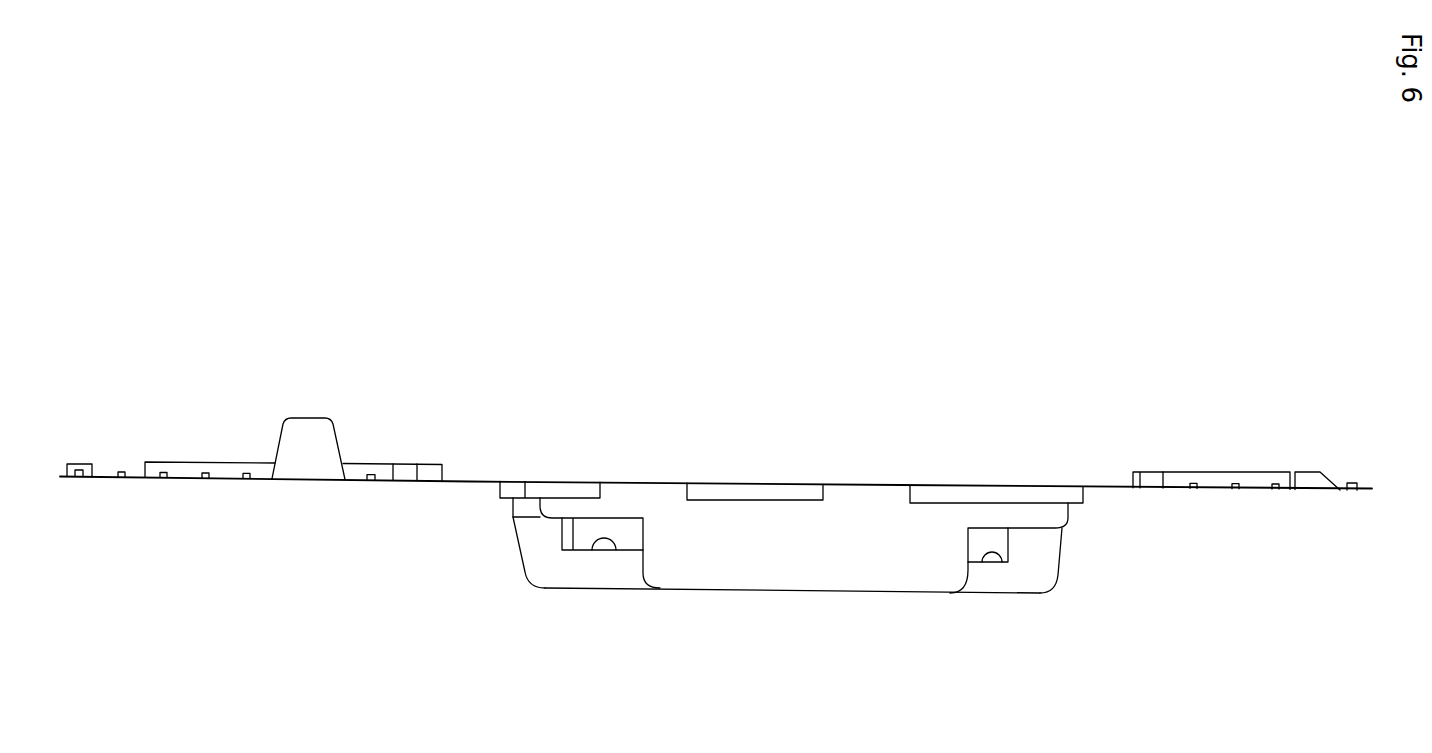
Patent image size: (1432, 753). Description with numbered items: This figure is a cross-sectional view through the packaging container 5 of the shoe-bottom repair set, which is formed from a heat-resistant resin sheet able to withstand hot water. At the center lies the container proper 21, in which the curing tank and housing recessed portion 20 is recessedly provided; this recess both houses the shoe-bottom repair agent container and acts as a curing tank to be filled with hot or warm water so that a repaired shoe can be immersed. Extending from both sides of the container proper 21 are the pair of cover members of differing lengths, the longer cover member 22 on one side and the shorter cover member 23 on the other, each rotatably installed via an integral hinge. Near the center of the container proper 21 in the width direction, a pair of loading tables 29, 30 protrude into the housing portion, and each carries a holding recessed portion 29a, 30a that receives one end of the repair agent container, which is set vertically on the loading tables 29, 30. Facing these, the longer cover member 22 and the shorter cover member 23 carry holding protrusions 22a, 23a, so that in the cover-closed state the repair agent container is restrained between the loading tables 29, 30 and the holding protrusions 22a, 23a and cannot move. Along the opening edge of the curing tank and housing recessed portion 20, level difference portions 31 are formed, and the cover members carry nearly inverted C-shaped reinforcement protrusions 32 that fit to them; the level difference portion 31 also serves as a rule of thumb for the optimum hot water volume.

The packaging container 5 is at (805, 445).
The curing tank and housing recessed portion 20 is at (822, 567).
The container proper 21 is at (772, 595).
The longer cover member 22 is at (225, 445).
The holding protrusion 22a is at (312, 417).
The shorter cover member 23 is at (1242, 463).
The holding protrusion 23a is at (1323, 472).
The loading table 29 is at (620, 518).
The holding recessed portion 29a is at (617, 550).
The loading table 30 is at (993, 527).
The holding recessed portion 30a is at (1003, 562).
The level difference portion 31 is at (940, 500).
The reinforcement protrusion 32 is at (88, 462).